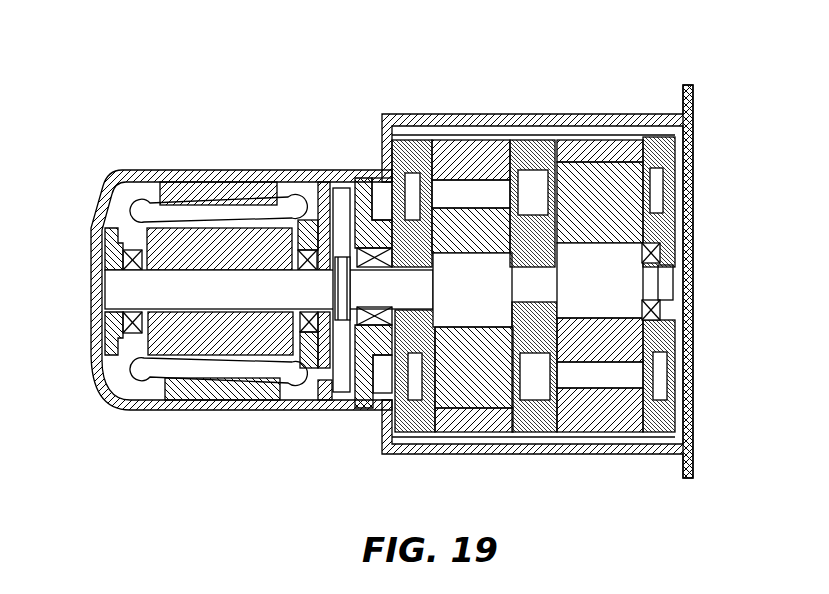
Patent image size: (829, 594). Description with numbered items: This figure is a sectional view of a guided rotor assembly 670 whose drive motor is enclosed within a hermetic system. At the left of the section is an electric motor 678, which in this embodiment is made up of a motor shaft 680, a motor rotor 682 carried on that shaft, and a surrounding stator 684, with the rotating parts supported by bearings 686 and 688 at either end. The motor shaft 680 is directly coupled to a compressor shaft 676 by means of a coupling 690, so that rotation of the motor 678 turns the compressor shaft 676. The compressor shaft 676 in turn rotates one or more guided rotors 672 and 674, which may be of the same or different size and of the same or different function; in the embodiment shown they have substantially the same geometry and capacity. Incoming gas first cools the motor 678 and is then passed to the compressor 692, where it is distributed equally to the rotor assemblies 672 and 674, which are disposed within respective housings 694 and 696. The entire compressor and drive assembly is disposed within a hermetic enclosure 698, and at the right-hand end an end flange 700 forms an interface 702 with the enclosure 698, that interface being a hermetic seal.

The guided rotor assembly 670 is at (165, 92).
The guided rotor 672 is at (462, 394).
The guided rotor 674 is at (588, 357).
The compressor shaft 676 is at (372, 296).
The electric motor 678 is at (105, 418).
The motor shaft 680 is at (115, 290).
The motor rotor 682 is at (157, 338).
The stator 684 is at (138, 210).
The bearing 686 is at (302, 206).
The bearing 688 is at (125, 260).
The coupling 690 is at (343, 258).
The compressor 692 is at (533, 114).
The housing 694 is at (492, 427).
The housing 696 is at (622, 422).
The hermetic enclosure 698 is at (228, 405).
The end flange 700 is at (695, 217).
The interface 702 is at (688, 479).